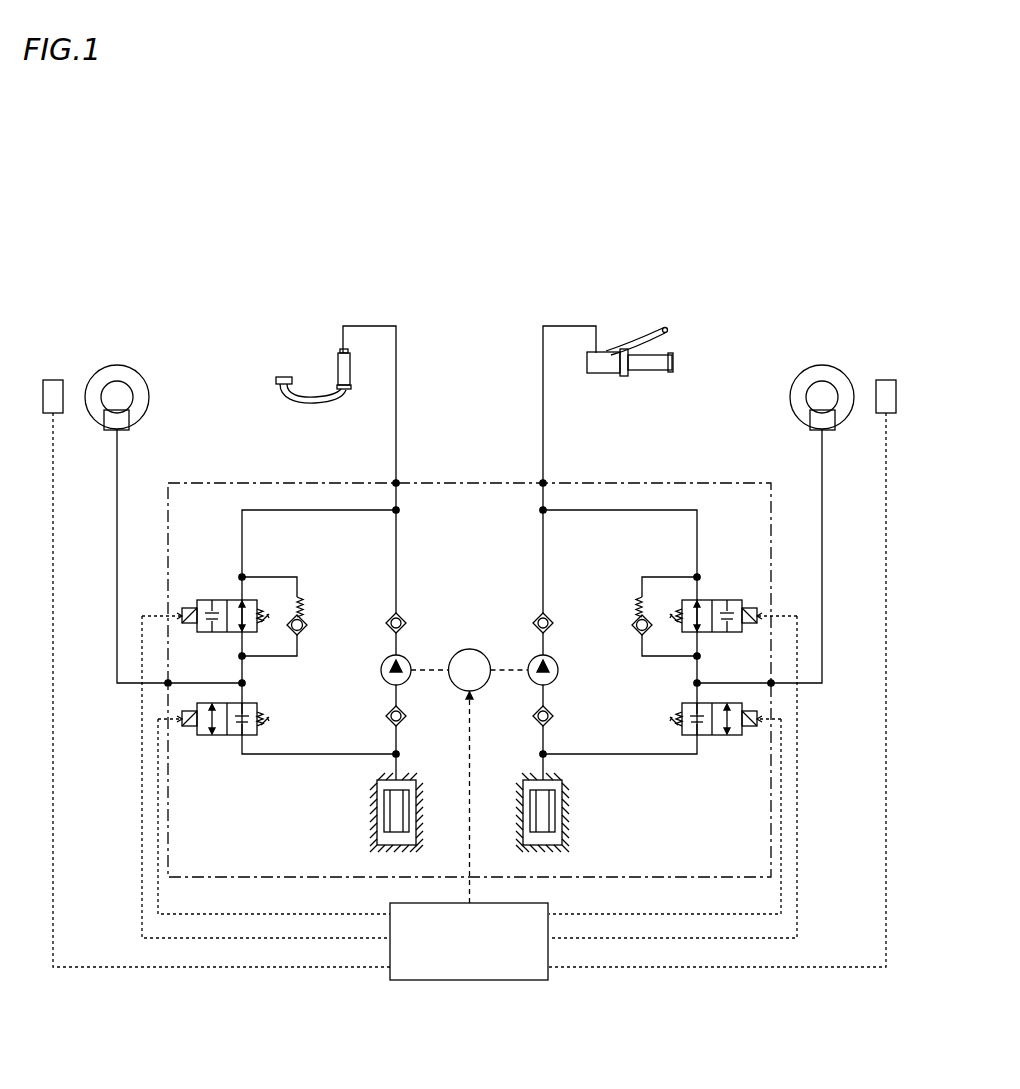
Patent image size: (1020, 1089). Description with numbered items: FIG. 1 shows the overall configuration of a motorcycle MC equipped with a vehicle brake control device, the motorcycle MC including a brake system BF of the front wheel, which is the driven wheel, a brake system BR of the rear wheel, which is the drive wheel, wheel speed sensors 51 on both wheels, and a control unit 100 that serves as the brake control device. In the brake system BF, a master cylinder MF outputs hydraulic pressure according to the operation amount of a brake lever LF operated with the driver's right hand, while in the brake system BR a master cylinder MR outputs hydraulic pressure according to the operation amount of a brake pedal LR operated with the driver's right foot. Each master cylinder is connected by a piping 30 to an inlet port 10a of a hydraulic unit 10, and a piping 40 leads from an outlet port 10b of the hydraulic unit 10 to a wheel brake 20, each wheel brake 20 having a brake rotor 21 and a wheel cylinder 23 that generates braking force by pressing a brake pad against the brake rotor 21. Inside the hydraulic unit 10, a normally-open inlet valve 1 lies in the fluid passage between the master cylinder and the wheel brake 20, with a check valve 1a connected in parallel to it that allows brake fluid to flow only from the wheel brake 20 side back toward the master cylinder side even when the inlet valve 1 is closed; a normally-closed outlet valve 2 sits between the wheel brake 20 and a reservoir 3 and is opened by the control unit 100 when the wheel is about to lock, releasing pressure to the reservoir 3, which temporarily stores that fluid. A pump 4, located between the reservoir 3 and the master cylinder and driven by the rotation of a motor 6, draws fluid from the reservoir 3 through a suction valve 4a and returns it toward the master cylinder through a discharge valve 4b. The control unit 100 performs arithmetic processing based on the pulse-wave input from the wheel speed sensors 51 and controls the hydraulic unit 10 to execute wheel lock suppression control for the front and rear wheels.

The inlet valve 1 is at (222, 600).
The check valve 1a is at (299, 597).
The outlet valve 2 is at (222, 735).
The reservoir 3 is at (377, 812).
The pump 4 is at (381, 672).
The suction valve 4a is at (386, 722).
The discharge valve 4b is at (386, 630).
The motor 6 is at (470, 649).
The hydraulic unit 10 is at (429, 476).
The inlet port 10a is at (396, 483).
The outlet port 10b is at (168, 683).
The wheel brake 20 is at (470, 352).
The brake rotor 21 is at (130, 372).
The wheel cylinder 23 is at (120, 428).
The piping 30 is at (396, 426).
The piping 40 is at (117, 556).
The wheel speed sensor 51 is at (53, 380).
The control unit 100 is at (500, 981).
The brake system of rear wheel BR is at (374, 310).
The brake system of front wheel BF is at (567, 310).
The brake pedal LR is at (280, 377).
The master cylinder MR is at (338, 361).
The brake lever LF is at (641, 345).
The master cylinder MF is at (612, 374).
The motorcycle MC is at (737, 254).